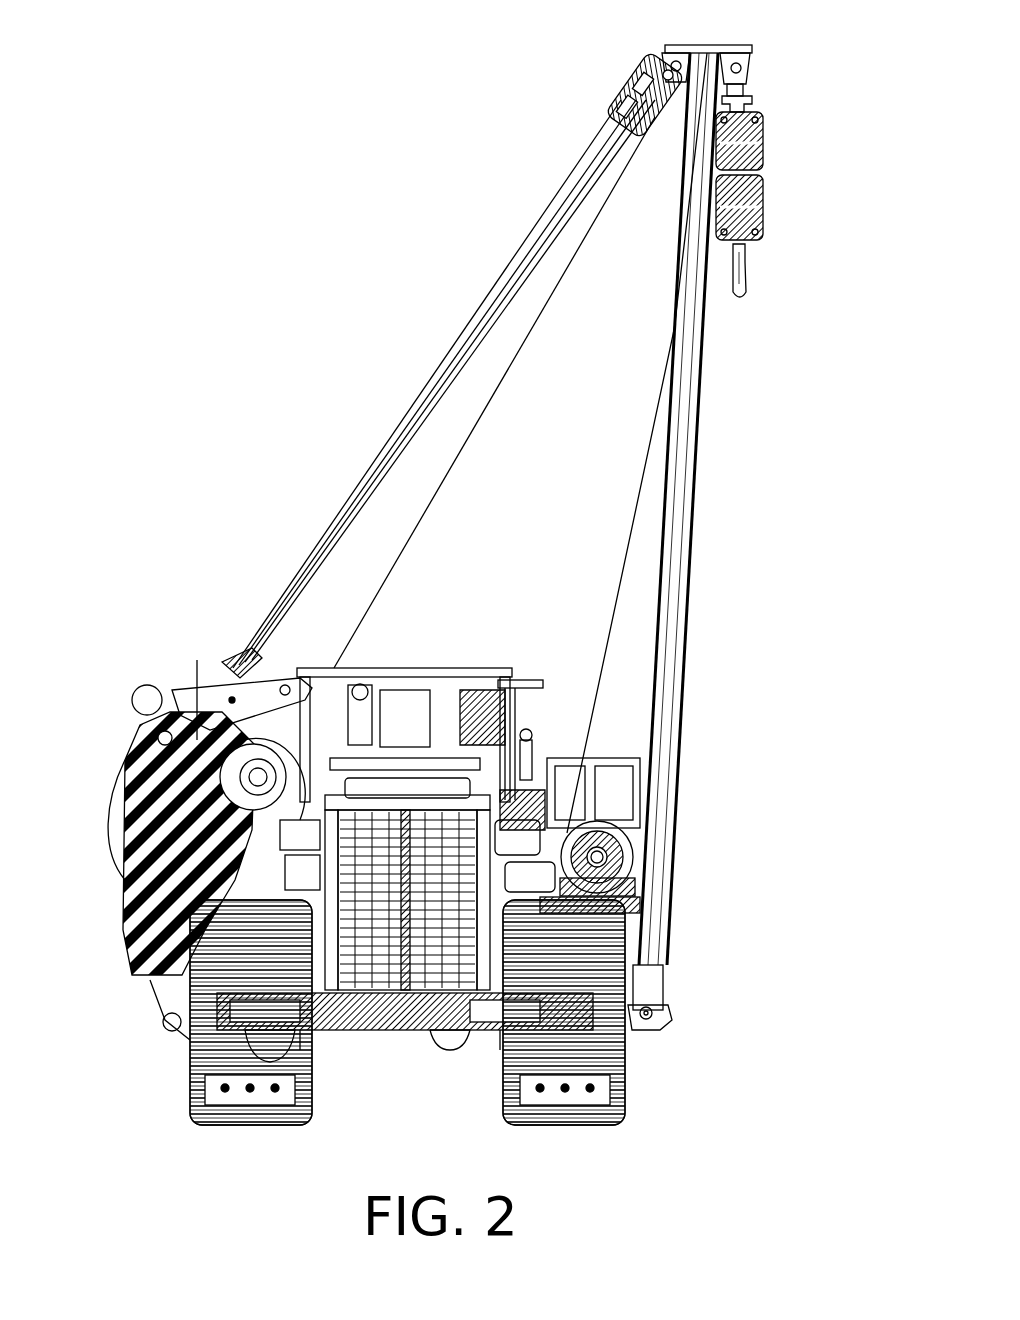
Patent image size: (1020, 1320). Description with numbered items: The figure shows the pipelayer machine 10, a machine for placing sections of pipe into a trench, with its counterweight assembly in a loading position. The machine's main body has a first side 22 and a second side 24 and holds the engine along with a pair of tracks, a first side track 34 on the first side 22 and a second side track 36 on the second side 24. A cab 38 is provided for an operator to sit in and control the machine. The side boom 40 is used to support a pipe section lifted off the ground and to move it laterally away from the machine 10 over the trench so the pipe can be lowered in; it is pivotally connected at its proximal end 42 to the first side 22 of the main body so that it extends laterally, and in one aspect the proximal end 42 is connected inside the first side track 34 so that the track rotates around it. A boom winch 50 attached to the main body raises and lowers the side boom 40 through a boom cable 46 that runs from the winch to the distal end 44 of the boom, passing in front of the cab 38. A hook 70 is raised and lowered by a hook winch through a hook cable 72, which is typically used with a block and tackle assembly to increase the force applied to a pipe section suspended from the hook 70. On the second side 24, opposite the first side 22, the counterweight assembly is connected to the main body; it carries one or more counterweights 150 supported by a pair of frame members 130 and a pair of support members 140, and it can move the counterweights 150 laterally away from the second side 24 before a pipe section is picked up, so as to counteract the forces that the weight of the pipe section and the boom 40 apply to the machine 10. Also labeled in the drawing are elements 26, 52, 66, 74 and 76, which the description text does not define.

The pipelayer machine 10 is at (230, 323).
The first side 22 is at (630, 1045).
The second side 24 is at (204, 1058).
The hydraulic system 26 is at (512, 782).
The first side track 34 is at (626, 1106).
The second side track 36 is at (224, 1092).
The cab 38 is at (405, 690).
The side boom 40 is at (664, 517).
The proximal end 42 is at (662, 975).
The distal end 44 is at (713, 48).
The boom cable 46 is at (448, 372).
The boom winch 50 is at (258, 778).
The cable anchor 52 is at (240, 662).
The winch 66 is at (612, 838).
The hook 70 is at (744, 283).
The hook cable 72 is at (658, 425).
The upper block 74 is at (763, 129).
The lower block 76 is at (763, 197).
The frame members 130 is at (622, 860).
The support members 140 is at (597, 824).
The counterweights 150 is at (130, 858).